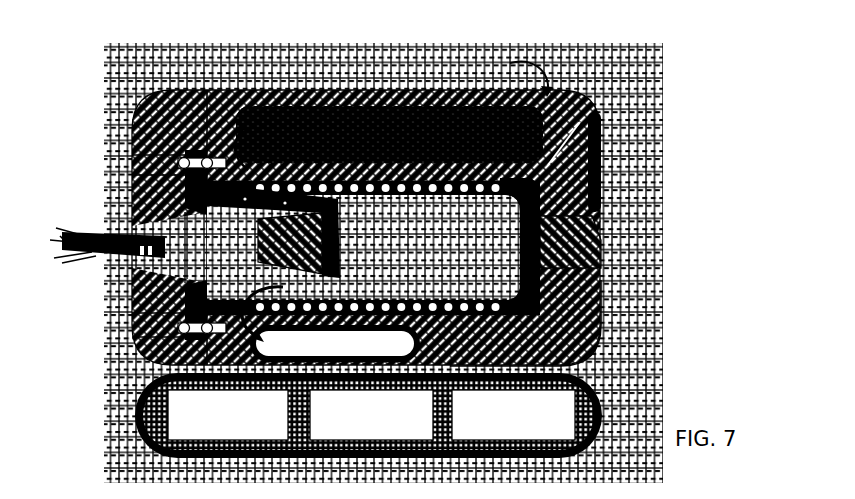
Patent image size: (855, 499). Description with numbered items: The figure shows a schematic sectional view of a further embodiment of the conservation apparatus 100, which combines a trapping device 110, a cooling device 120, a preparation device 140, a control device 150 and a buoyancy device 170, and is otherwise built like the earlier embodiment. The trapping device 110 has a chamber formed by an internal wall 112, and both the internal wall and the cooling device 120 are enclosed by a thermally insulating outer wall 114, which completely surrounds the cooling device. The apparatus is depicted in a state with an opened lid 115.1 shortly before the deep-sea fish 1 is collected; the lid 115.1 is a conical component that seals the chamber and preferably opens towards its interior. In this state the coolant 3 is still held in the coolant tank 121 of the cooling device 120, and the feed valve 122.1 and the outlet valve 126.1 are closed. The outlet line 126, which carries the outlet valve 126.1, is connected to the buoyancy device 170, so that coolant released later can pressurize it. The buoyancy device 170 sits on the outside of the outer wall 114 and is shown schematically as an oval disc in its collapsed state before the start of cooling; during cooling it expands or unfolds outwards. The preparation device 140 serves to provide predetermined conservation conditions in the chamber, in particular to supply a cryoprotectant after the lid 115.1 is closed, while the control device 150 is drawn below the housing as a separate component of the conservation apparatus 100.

The conservation apparatus 100 is at (136, 94).
The feed valve 122.1 is at (232, 150).
The buoyancy device 170 is at (591, 112).
The coolant 3 is at (332, 147).
The coolant tank 121 is at (425, 147).
The outlet valve 126.1 is at (556, 163).
The cooling device 120 is at (674, 93).
The deep-sea fish 1 is at (112, 240).
The trapping device 110 is at (674, 186).
The lid 115.1 is at (344, 261).
The outlet line 126 is at (504, 198).
The preparation device 140 is at (328, 356).
The internal wall 112 is at (532, 313).
The thermally insulating outer wall 114 is at (598, 330).
The control device 150 is at (100, 412).